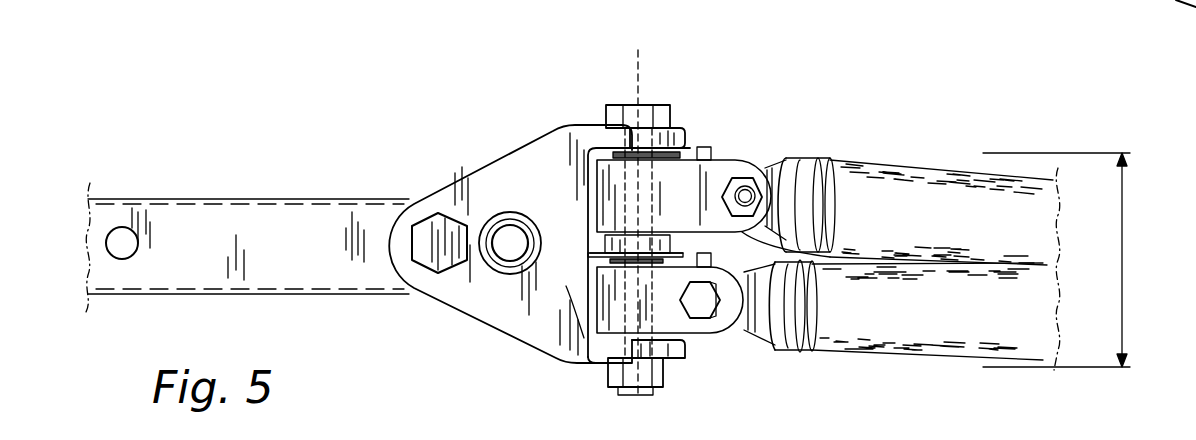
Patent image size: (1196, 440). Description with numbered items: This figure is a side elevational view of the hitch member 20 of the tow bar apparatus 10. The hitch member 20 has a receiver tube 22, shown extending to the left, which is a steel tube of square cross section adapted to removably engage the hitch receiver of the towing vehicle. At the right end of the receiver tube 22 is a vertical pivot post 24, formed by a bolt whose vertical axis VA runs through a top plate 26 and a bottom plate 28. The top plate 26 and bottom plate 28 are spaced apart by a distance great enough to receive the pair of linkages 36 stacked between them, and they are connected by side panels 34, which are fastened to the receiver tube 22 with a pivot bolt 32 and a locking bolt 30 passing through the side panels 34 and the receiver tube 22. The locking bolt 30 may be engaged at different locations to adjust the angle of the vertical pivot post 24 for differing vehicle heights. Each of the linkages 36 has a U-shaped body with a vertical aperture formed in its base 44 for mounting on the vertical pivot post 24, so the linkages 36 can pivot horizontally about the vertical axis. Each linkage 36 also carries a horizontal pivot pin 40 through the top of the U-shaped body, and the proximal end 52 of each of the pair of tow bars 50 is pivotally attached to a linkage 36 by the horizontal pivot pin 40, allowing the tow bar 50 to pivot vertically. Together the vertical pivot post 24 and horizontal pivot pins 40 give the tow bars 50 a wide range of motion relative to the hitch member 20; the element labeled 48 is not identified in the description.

The tow bar apparatus 10 is at (804, 82).
The hitch member 20 is at (545, 106).
The receiver tube 22 is at (274, 205).
The vertical pivot post 24 is at (662, 108).
The top plate 26 is at (683, 130).
The bottom plate 28 is at (677, 360).
The locking bolt 30 is at (501, 254).
The pivot bolt 32 is at (430, 213).
The side panels 34 is at (567, 287).
The linkages 36 is at (660, 310).
The horizontal pivot pin 40 is at (750, 192).
The base 44 is at (598, 318).
The tube end fitting 48 is at (745, 325).
The tow bars 50 is at (1033, 302).
The proximal end 52 is at (893, 185).